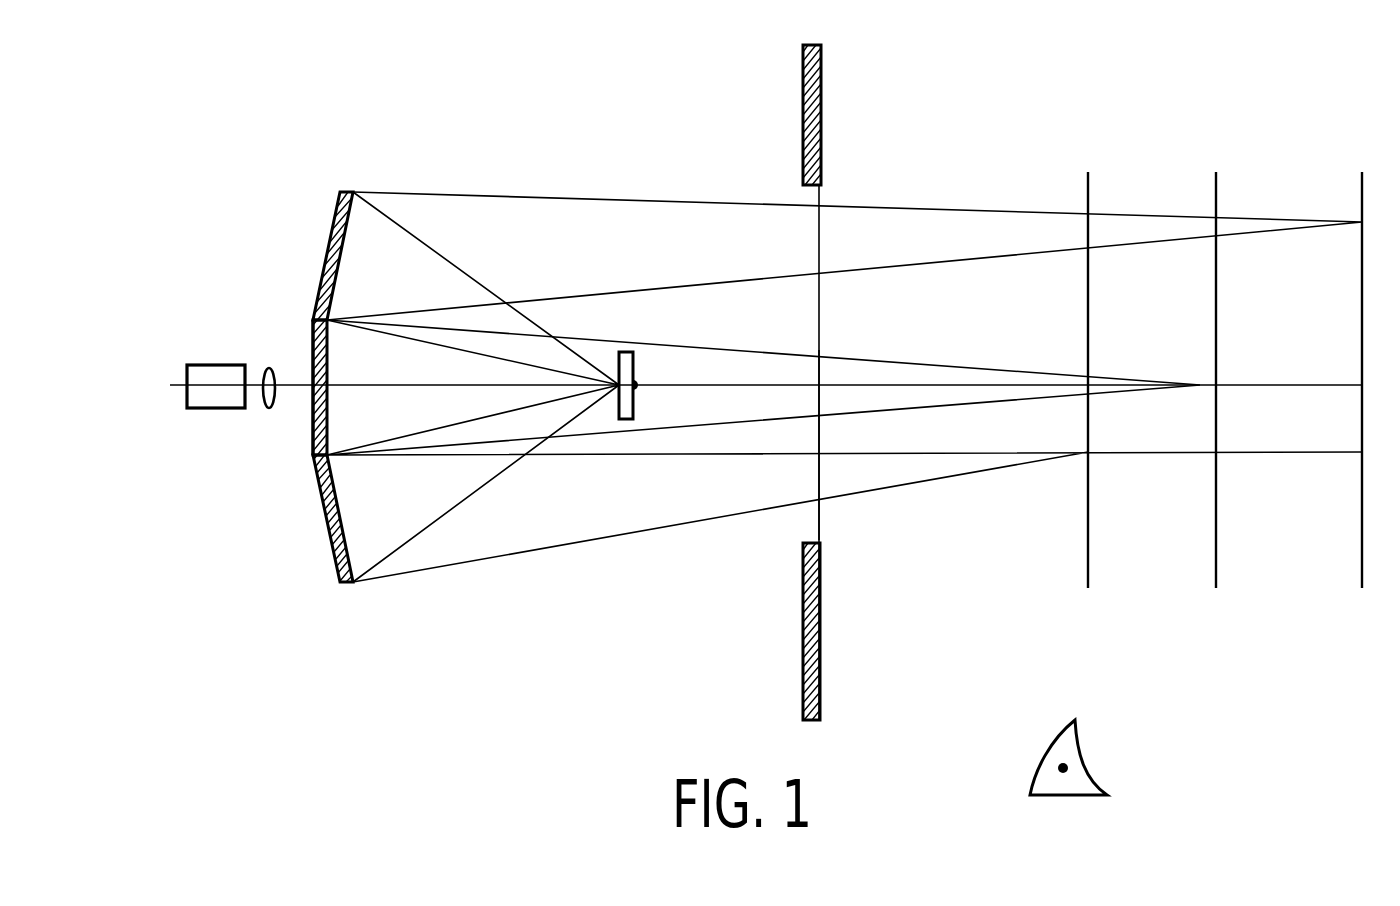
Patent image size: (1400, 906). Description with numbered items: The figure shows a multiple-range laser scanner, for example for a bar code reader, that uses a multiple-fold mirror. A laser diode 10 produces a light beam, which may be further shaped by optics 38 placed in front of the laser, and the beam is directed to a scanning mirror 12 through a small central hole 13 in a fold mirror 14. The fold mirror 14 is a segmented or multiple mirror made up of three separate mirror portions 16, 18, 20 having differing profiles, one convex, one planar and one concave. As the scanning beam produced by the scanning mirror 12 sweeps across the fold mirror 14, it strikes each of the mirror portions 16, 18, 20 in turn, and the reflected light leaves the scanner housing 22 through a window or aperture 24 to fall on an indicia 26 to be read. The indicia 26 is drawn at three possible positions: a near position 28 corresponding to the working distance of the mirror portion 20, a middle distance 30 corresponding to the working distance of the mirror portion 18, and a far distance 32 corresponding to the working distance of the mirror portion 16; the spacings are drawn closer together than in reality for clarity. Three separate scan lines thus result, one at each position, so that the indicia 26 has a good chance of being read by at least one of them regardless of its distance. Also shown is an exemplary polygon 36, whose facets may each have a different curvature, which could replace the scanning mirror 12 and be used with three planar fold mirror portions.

The laser diode 10 is at (184, 386).
The scanning mirror 12 is at (633, 412).
The central hole 13 is at (326, 385).
The fold mirror 14 is at (279, 342).
The mirror portion 16 is at (330, 243).
The mirror portion 18 is at (314, 432).
The mirror portion 20 is at (326, 527).
The scanner housing 22 is at (819, 643).
The window or aperture 24 is at (814, 520).
The indicia 26 is at (1225, 364).
The near position 28 is at (1088, 148).
The middle distance 30 is at (1216, 148).
The far distance 32 is at (1362, 148).
The polygon 36 is at (1087, 762).
The optics 38 is at (267, 366).